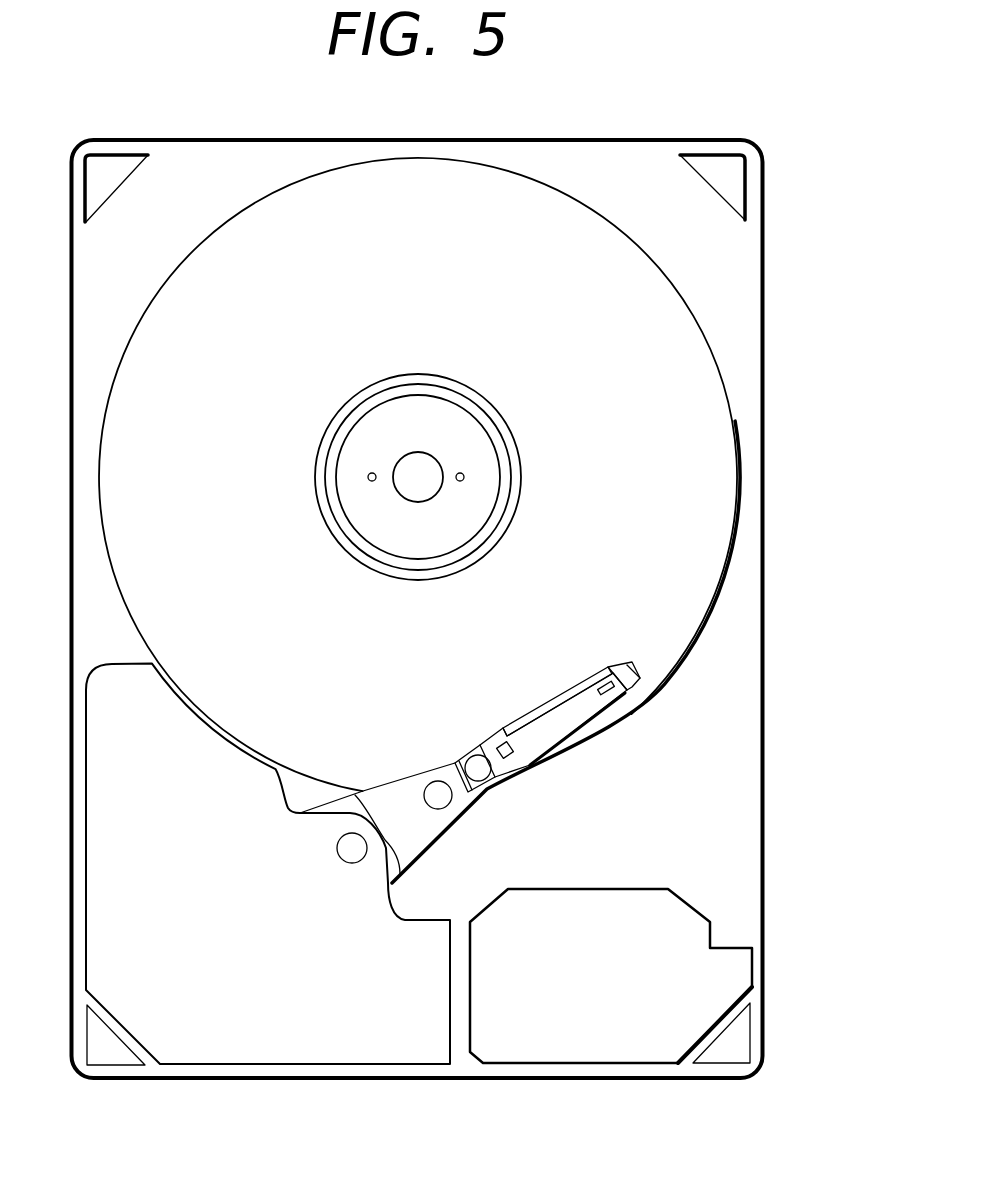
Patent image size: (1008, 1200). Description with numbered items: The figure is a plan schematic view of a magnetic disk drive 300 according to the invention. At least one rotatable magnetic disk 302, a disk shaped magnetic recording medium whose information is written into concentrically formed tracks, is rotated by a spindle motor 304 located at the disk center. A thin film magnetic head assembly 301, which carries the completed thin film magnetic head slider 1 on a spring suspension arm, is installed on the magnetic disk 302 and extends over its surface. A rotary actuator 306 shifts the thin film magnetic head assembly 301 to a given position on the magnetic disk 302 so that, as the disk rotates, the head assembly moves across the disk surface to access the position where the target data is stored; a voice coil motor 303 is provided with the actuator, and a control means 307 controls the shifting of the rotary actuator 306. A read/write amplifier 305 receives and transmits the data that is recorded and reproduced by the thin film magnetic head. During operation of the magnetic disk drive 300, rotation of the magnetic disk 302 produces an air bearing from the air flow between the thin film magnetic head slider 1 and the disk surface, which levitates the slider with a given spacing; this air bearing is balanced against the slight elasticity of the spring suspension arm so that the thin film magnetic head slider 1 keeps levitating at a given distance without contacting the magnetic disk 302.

The thin film magnetic head slider 1 is at (633, 665).
The magnetic disk drive 300 is at (765, 828).
The thin film magnetic head assembly 301 is at (560, 723).
The magnetic disk 302 is at (673, 362).
The voice coil motor 303 is at (407, 933).
The spindle motor 304 is at (475, 497).
The read/write amplifier 305 is at (583, 903).
The rotary actuator 306 is at (392, 803).
The control means 307 is at (742, 587).